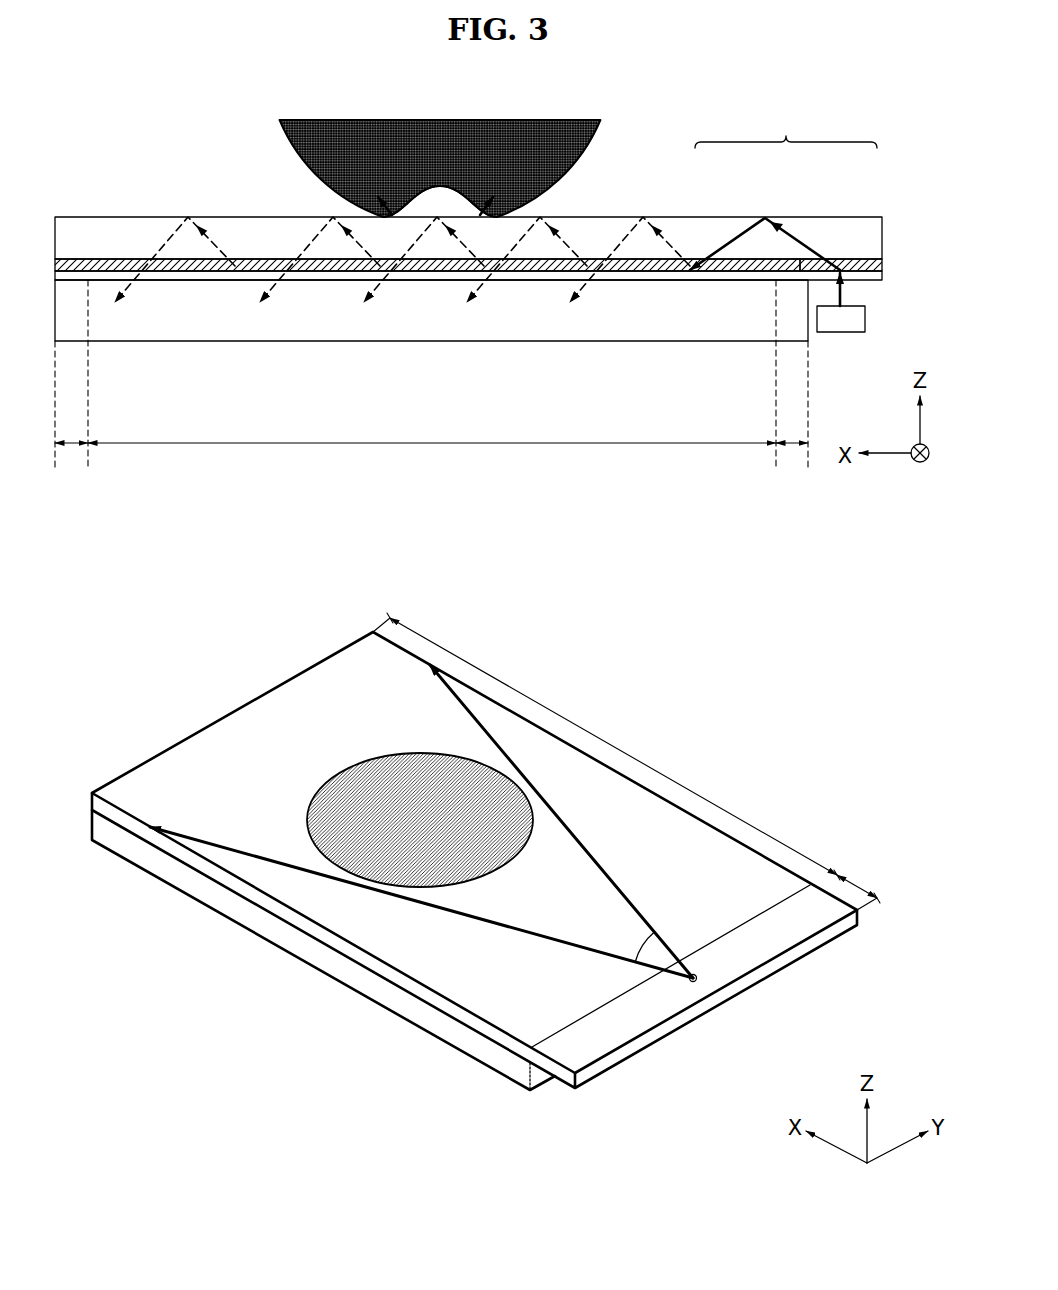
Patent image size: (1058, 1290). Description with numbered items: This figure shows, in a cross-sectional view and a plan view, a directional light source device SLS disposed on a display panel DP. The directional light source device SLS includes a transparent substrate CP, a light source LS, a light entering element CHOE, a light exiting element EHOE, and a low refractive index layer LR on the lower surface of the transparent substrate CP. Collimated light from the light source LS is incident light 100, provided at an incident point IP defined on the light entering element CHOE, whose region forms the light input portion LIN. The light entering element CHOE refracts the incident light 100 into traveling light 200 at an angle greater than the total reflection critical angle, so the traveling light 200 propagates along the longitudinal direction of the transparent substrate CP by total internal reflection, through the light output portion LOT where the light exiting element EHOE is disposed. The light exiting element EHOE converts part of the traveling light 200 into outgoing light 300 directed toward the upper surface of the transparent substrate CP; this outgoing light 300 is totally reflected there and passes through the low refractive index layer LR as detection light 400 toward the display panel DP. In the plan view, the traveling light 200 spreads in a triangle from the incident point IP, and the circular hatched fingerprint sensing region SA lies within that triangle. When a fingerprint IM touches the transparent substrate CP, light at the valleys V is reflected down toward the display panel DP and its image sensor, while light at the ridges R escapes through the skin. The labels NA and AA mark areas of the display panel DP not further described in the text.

The incident light 100 is at (492, 631).
The traveling light 200 is at (468, 580).
The outgoing light 300 is at (471, 631).
The detection light 400 is at (128, 285).
The fingerprint IM is at (400, 168).
The ridges R is at (390, 208).
The valleys V is at (437, 182).
The directional light source device SLS is at (230, 970).
The transparent substrate CP is at (695, 232).
The light exiting element EHOE is at (760, 262).
The low refractive index layer LR is at (795, 274).
The light entering element CHOE is at (853, 266).
The light source LS is at (852, 320).
The display panel DP is at (688, 332).
The non-active area NA is at (431, 378).
The active area AA is at (432, 459).
The fingerprint sensing region SA is at (350, 772).
The light output portion LOT is at (606, 746).
The light input portion LIN is at (865, 883).
The incident point IP is at (698, 984).